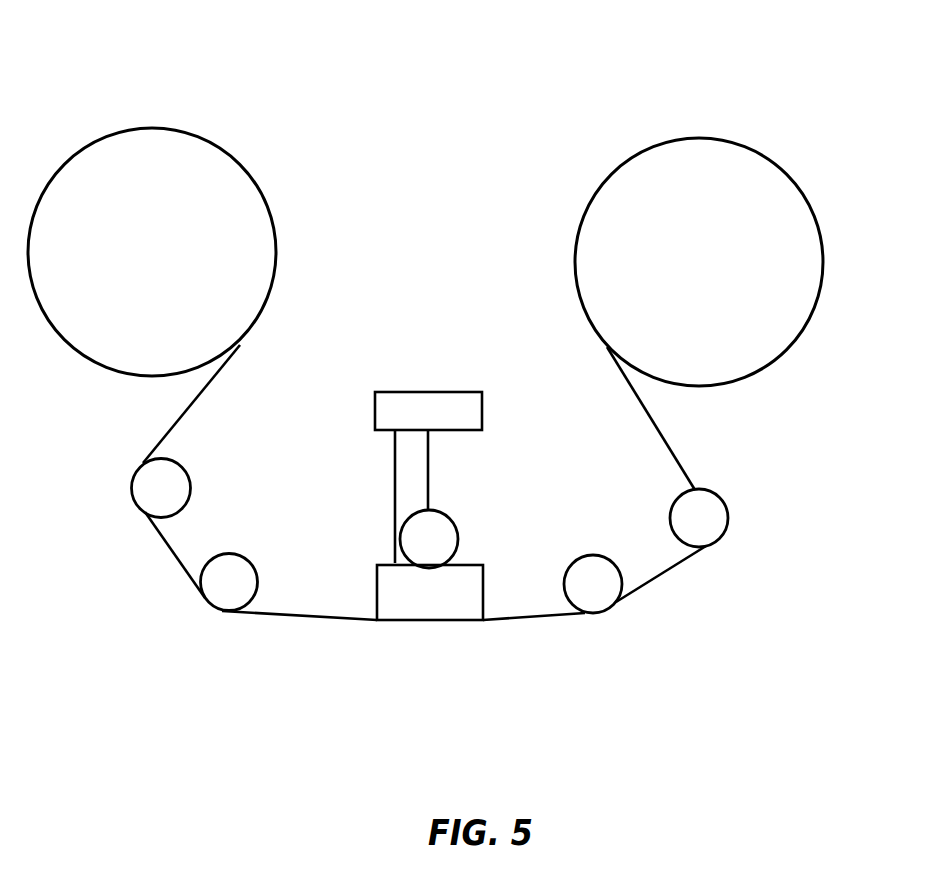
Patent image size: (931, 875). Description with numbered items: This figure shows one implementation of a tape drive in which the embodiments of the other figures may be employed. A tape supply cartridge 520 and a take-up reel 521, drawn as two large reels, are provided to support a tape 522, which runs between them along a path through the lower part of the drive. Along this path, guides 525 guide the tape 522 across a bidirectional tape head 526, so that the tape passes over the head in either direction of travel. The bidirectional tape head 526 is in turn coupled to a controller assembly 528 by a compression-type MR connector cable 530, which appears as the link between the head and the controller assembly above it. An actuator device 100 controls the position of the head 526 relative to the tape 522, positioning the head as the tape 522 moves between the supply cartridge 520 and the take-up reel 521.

The tape supply cartridge 520 is at (147, 128).
The take-up reel 521 is at (698, 138).
The tape 522 is at (302, 618).
The guides 525 is at (192, 487).
The bidirectional tape head 526 is at (483, 592).
The controller assembly 528 is at (427, 390).
The compression-type MR connector cable 530 is at (395, 537).
The actuator device 100 is at (448, 517).